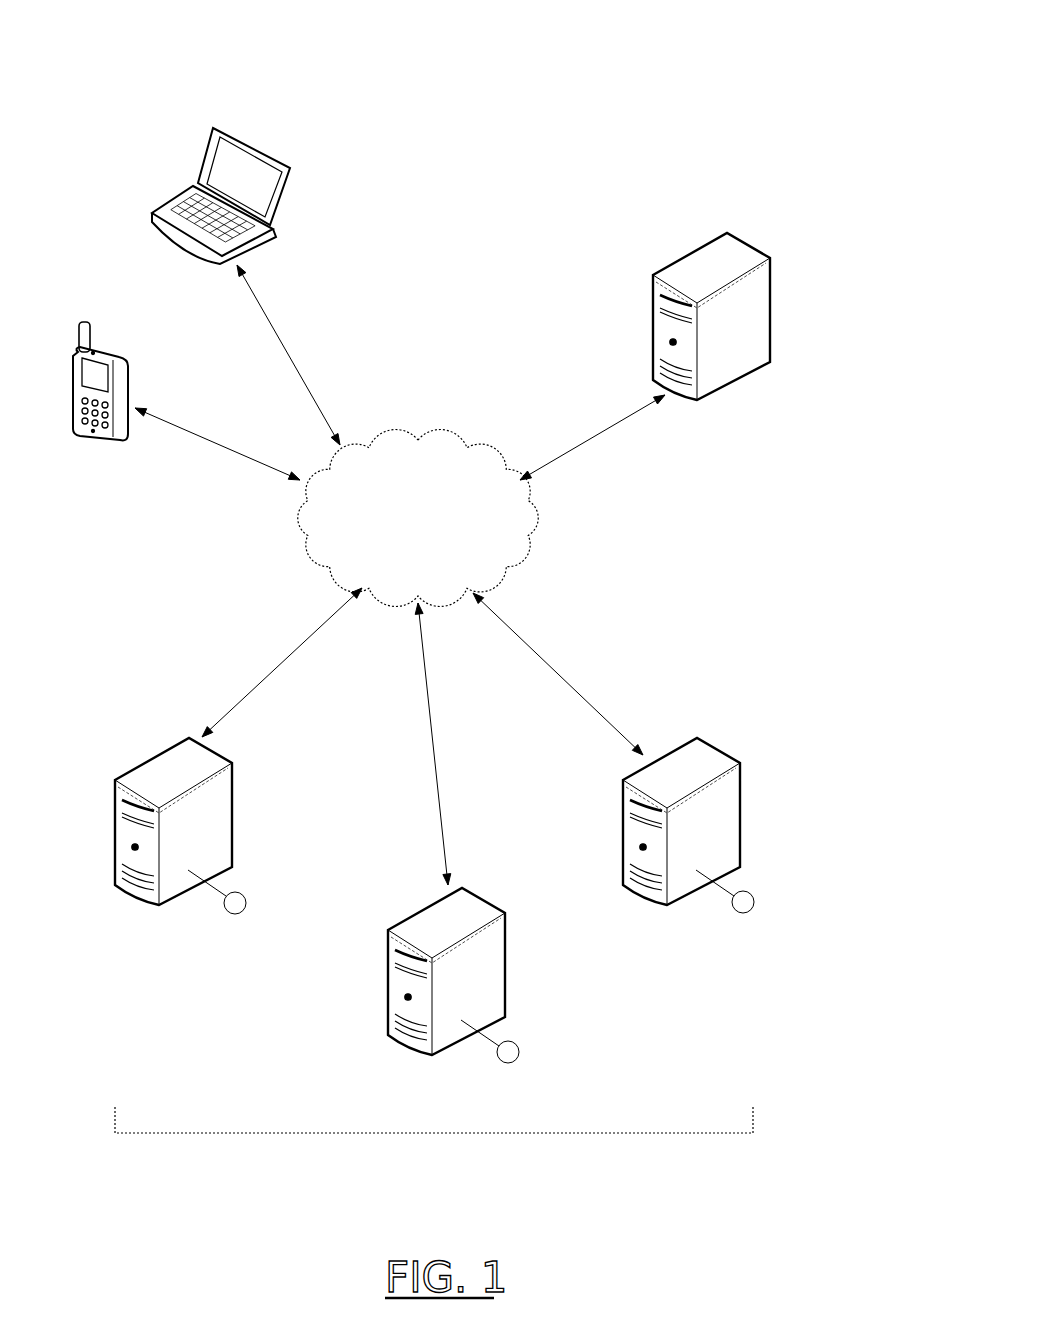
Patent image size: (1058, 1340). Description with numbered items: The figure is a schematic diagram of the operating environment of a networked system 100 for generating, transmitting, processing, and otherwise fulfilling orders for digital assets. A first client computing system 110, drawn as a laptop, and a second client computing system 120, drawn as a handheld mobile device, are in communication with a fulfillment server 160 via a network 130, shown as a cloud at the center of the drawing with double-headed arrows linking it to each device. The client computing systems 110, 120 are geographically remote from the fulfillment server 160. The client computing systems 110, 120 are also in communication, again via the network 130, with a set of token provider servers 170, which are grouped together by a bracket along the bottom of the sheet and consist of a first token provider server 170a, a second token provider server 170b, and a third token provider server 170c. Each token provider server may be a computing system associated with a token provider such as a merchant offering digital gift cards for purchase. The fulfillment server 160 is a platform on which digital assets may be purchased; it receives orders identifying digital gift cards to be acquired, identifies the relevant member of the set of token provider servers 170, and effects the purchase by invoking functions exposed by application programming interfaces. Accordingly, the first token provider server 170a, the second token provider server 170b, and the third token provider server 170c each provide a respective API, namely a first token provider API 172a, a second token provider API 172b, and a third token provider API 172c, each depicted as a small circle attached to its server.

The networked system 100 is at (503, 125).
The first client computing system 110 is at (253, 133).
The second client computing system 120 is at (118, 342).
The network 130 is at (399, 543).
The fulfillment server 160 is at (753, 247).
The set of token provider servers 170 is at (453, 1135).
The first token provider server 170a is at (225, 792).
The second token provider server 170b is at (498, 940).
The third token provider server 170c is at (733, 791).
The first token provider API 172a is at (229, 916).
The second token provider API 172b is at (502, 1065).
The third token provider API 172c is at (737, 915).